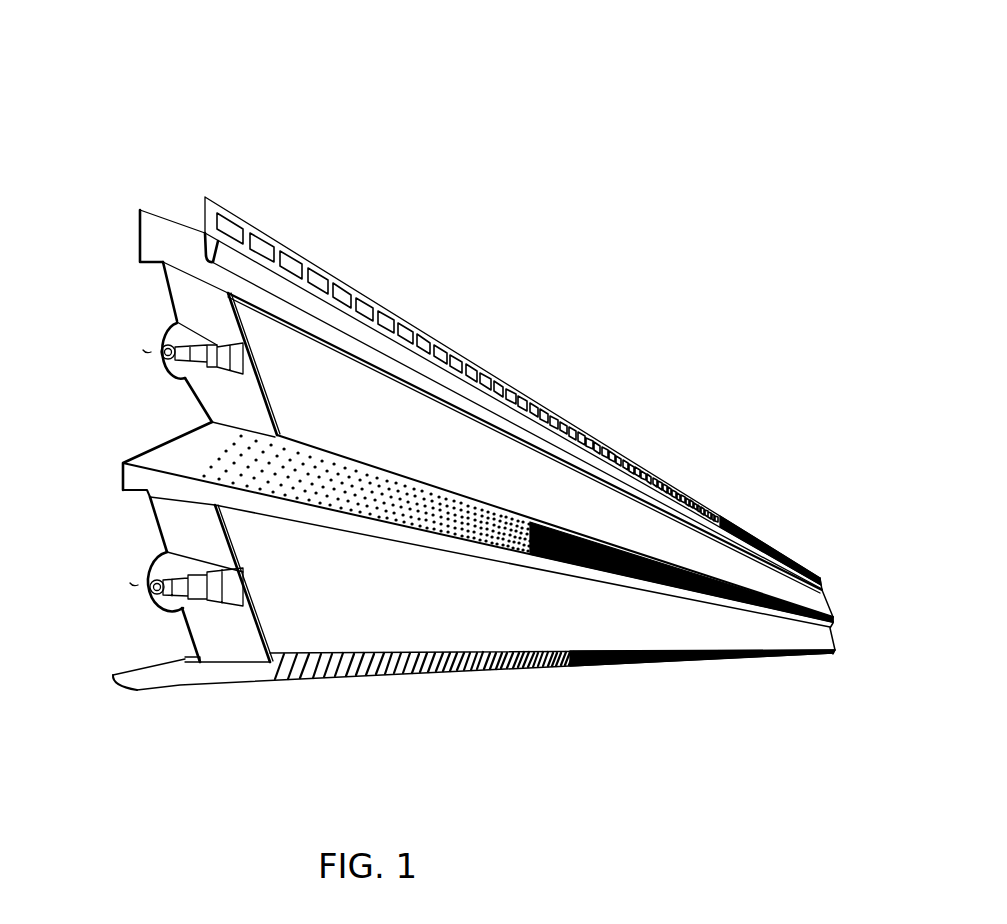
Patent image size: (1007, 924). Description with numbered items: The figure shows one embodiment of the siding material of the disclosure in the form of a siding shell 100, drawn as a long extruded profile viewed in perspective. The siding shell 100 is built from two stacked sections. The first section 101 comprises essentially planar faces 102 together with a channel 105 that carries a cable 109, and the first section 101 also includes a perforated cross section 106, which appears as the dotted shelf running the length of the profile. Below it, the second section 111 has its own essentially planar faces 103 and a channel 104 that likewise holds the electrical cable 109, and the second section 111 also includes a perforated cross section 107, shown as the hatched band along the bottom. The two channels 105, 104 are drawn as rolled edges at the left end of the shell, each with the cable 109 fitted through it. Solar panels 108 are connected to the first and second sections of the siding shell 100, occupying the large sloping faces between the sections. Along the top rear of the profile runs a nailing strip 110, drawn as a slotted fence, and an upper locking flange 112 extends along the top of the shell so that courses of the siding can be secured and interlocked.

The siding shell 100 is at (191, 73).
The first section 101 is at (162, 235).
The essentially planar faces 102 is at (190, 278).
The essentially planar faces 103 is at (177, 523).
The channel 104 is at (140, 582).
The channel 105 is at (150, 353).
The perforated cross section 106 is at (428, 500).
The perforated cross section 107 is at (538, 668).
The solar panels 108 is at (318, 415).
The cable 109 is at (178, 325).
The nailing strip 110 is at (253, 230).
The second section 111 is at (143, 693).
The upper locking flange 112 is at (358, 330).